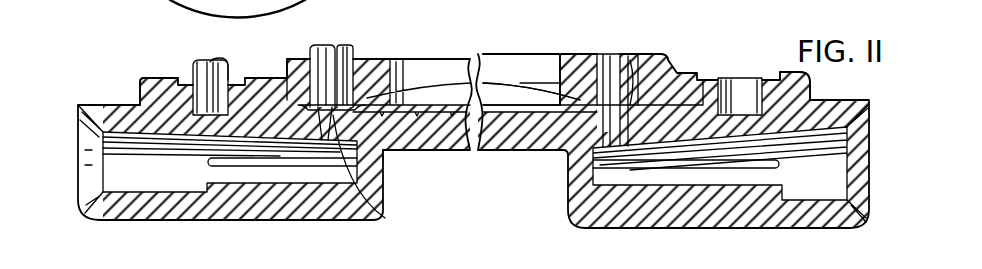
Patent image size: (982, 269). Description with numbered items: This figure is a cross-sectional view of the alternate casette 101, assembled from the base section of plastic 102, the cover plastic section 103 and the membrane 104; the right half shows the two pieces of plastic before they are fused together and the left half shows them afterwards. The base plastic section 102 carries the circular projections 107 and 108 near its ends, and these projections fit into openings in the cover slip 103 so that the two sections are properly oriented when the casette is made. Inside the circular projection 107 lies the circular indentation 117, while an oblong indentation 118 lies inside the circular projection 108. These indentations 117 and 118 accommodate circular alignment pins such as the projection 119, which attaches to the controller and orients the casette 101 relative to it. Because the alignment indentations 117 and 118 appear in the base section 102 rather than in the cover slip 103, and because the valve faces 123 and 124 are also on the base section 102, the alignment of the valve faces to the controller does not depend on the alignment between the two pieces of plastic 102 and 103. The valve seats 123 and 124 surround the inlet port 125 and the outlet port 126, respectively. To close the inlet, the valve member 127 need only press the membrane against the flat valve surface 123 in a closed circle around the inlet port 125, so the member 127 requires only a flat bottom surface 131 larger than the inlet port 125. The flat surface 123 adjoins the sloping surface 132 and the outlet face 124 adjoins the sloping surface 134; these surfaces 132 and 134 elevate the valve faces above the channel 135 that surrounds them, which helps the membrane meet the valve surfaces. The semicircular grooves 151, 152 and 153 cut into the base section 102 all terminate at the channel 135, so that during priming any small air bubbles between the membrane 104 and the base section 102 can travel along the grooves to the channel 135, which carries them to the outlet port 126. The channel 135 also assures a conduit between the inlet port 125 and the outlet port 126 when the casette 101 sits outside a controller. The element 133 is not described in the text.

The casette 101 is at (73, 86).
The base section of plastic 102 is at (385, 193).
The cover plastic section 103 is at (268, 80).
The membrane 104 is at (437, 100).
The circular projection 107 is at (140, 103).
The circular projection 108 is at (768, 78).
The circular indentation 117 is at (195, 84).
The oblong indentation 118 is at (753, 90).
The projection 119 is at (222, 78).
The valve face 123 is at (383, 148).
The valve face 124 is at (640, 110).
The inlet port 125 is at (374, 220).
The outlet port 126 is at (610, 110).
The valve member 127 is at (357, 47).
The flat bottom surface 131 is at (337, 50).
The sloping surface 132 is at (305, 112).
The seal 133 is at (541, 100).
The sloping surface 134 is at (663, 57).
The channel 135 is at (503, 167).
The semicircular groove 151 is at (478, 90).
The semicircular groove 152 is at (523, 110).
The semicircular groove 153 is at (553, 105).